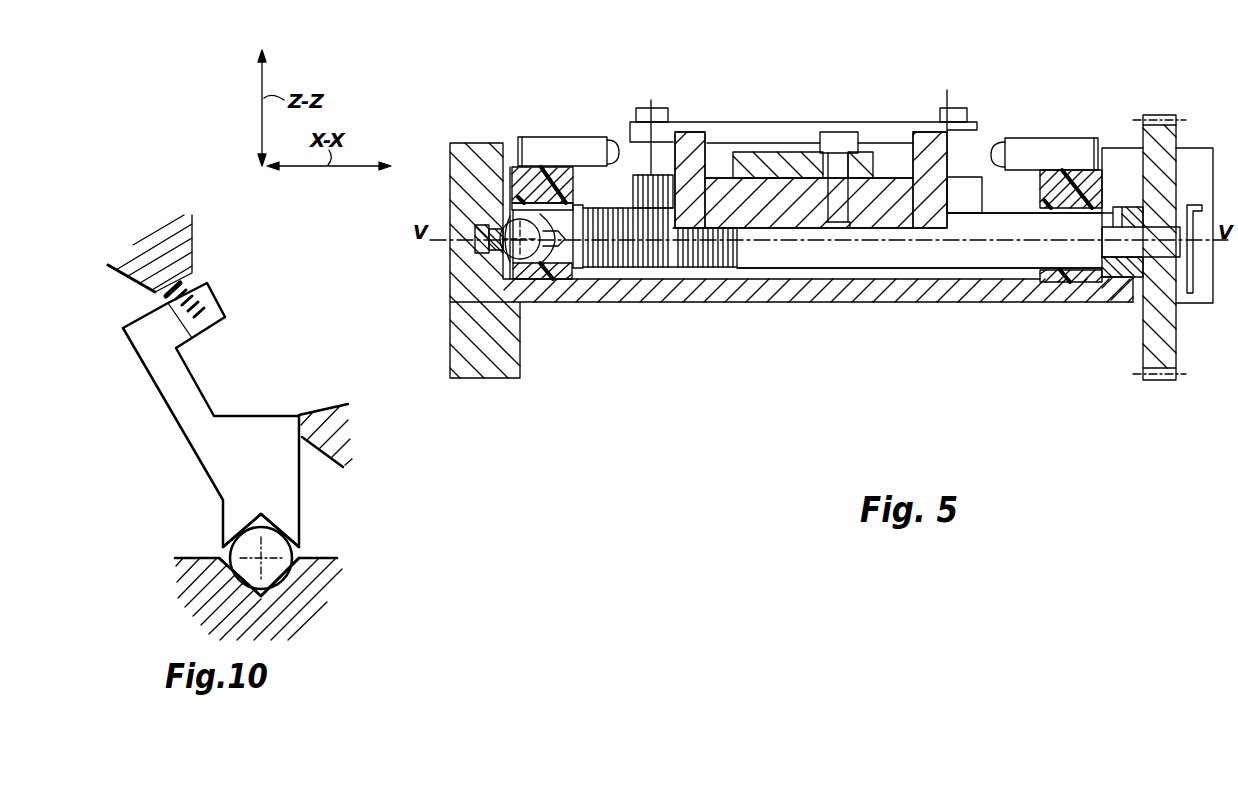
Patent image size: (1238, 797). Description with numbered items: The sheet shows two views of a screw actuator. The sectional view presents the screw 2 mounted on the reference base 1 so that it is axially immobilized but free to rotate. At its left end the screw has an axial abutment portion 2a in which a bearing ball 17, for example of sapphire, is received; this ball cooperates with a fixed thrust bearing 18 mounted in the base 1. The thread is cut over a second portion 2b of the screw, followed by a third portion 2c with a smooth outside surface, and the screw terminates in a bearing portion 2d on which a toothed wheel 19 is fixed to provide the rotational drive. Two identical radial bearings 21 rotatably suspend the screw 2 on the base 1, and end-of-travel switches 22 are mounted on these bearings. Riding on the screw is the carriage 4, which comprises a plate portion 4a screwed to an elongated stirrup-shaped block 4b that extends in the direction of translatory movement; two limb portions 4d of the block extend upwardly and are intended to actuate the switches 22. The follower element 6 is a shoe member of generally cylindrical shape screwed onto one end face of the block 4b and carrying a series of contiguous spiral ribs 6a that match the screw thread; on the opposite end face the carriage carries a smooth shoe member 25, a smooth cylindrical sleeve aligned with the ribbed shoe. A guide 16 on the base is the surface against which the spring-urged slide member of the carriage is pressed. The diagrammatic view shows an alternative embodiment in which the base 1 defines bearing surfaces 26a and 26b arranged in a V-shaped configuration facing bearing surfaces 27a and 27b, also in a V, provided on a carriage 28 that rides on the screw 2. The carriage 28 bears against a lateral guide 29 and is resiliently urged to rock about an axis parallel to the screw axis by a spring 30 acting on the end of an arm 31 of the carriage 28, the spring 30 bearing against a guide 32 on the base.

In FIG. 10, the reference base 1 is at (195, 605).
In FIG. 5, the screw 2 is at (933, 276).
In FIG. 10, the screw 2 is at (272, 570).
In FIG. 5, the axial abutment portion 2a is at (560, 262).
In FIG. 5, the second portion of the screw 2b is at (660, 262).
In FIG. 5, the third portion of the screw 2c is at (995, 252).
In FIG. 5, the bearing portion 2d is at (1135, 252).
In FIG. 5, the carriage 4 is at (758, 230).
In FIG. 5, the plate portion 4a is at (805, 150).
In FIG. 5, the block 4b is at (878, 208).
In FIG. 5, the limb portions 4d is at (693, 150).
In FIG. 5, the follower element 6 is at (655, 180).
In FIG. 5, the contiguous ribs 6a is at (650, 178).
In FIG. 5, the guide 16 is at (765, 130).
In FIG. 5, the bearing ball 17 is at (492, 258).
In FIG. 5, the fixed thrust bearing 18 is at (480, 232).
In FIG. 5, the toothed wheel 19 is at (1172, 140).
In FIG. 5, the radial bearings 21 is at (530, 185).
In FIG. 5, the end-of-travel switches 22 is at (572, 150).
In FIG. 5, the smooth shoe member 25 is at (965, 195).
In FIG. 10, the bearing surface 26a is at (223, 555).
In FIG. 10, the bearing surface 26b is at (297, 557).
In FIG. 10, the bearing surface 27a is at (252, 523).
In FIG. 10, the bearing surface 27b is at (268, 525).
In FIG. 10, the carriage 28 is at (257, 437).
In FIG. 10, the lateral guide 29 is at (300, 437).
In FIG. 10, the spring 30 is at (203, 320).
In FIG. 10, the arm 31 is at (180, 392).
In FIG. 10, the guide 32 is at (195, 250).